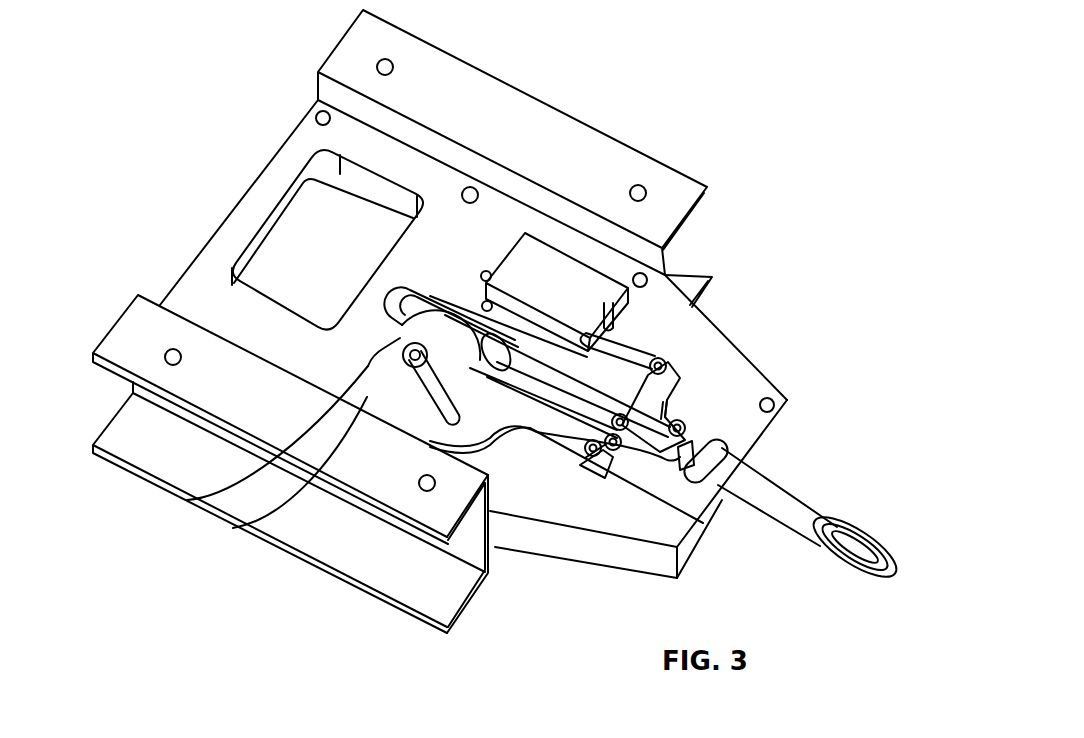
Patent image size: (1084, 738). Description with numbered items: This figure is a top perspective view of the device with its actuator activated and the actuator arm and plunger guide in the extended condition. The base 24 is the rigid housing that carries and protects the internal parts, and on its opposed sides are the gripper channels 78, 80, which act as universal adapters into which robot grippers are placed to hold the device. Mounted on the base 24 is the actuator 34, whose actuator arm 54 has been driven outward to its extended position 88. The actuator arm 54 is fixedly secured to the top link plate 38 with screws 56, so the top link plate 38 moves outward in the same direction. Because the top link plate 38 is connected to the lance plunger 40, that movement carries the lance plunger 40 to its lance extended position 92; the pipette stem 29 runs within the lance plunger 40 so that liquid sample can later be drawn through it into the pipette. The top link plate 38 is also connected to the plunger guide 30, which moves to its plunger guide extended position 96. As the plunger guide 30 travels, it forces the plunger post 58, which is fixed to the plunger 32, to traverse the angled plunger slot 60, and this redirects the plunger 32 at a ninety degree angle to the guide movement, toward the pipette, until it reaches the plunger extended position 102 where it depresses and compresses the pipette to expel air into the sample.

The base 24 is at (156, 247).
The gripper channel 80 is at (568, 140).
The gripper channel 78 is at (167, 452).
The actuator 34 is at (563, 278).
The actuator arm 54 is at (637, 357).
The pipette stem 29 is at (585, 400).
The plunger guide 30 is at (487, 422).
The extended position 88 is at (707, 410).
The top link plate 38 is at (672, 378).
The screws 56 is at (660, 366).
The lance plunger 40 is at (732, 430).
The lance extended position 92 is at (748, 440).
The plunger guide extended position 96 is at (607, 497).
The plunger slot 60 is at (233, 528).
The plunger 32 is at (390, 420).
The plunger post 58 is at (190, 500).
The plunger extended position 102 is at (470, 380).